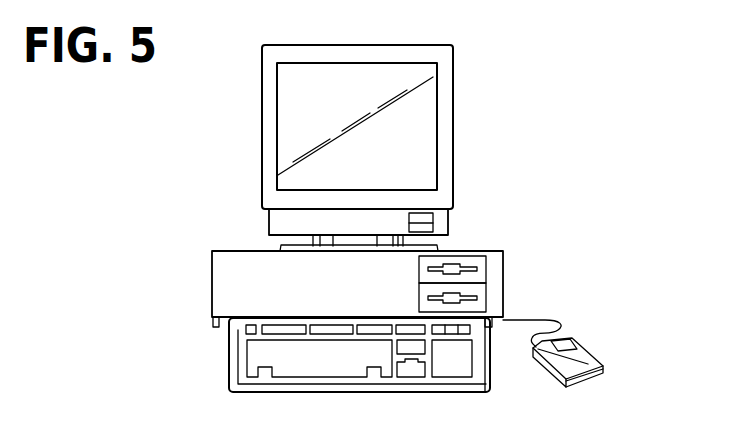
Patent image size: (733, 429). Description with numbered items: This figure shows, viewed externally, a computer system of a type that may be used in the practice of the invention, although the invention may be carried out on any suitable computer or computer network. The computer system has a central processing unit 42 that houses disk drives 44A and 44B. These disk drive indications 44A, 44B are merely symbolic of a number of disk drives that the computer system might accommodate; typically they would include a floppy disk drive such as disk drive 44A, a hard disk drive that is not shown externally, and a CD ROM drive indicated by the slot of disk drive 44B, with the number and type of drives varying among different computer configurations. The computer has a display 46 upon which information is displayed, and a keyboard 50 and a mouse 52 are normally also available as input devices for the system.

The central processing unit 42 is at (187, 237).
The display 46 is at (453, 95).
The disk drive 44A is at (478, 267).
The disk drive 44B is at (485, 292).
The keyboard 50 is at (229, 372).
The mouse 52 is at (582, 361).